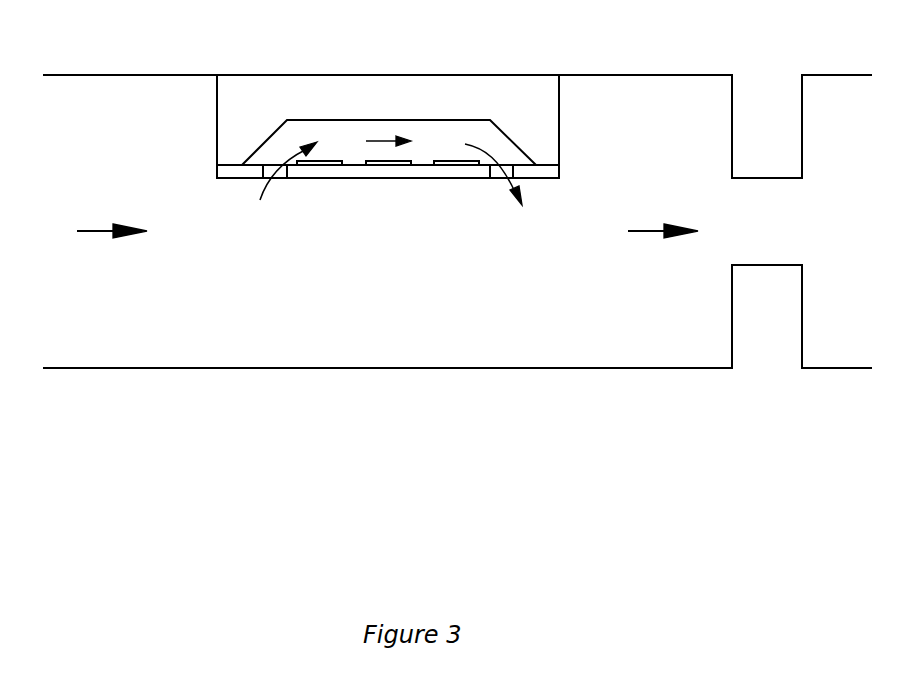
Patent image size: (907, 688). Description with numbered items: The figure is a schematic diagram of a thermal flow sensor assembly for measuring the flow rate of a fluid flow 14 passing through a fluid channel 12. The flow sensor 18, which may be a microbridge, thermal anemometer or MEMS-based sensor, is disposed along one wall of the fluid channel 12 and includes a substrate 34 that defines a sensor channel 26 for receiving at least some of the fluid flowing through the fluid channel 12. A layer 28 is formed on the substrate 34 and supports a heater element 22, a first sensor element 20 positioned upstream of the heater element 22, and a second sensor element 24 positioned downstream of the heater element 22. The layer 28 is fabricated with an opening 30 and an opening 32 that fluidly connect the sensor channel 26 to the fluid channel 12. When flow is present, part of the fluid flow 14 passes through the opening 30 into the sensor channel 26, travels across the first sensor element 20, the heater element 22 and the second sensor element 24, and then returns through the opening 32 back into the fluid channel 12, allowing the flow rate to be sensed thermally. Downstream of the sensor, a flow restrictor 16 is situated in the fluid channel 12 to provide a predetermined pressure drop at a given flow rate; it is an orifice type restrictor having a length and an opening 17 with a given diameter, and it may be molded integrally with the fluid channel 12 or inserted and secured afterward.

The fluid channel 12 is at (113, 118).
The fluid flow 14 is at (90, 232).
The flow restrictor 16 is at (767, 98).
The opening 17 is at (753, 237).
The flow sensor 18 is at (267, 88).
The first sensor element 20 is at (337, 170).
The heater element 22 is at (390, 170).
The second sensor element 24 is at (444, 170).
The sensor channel 26 is at (482, 130).
The layer 28 is at (217, 172).
The opening 30 is at (281, 178).
The opening 32 is at (497, 178).
The substrate 34 is at (217, 119).